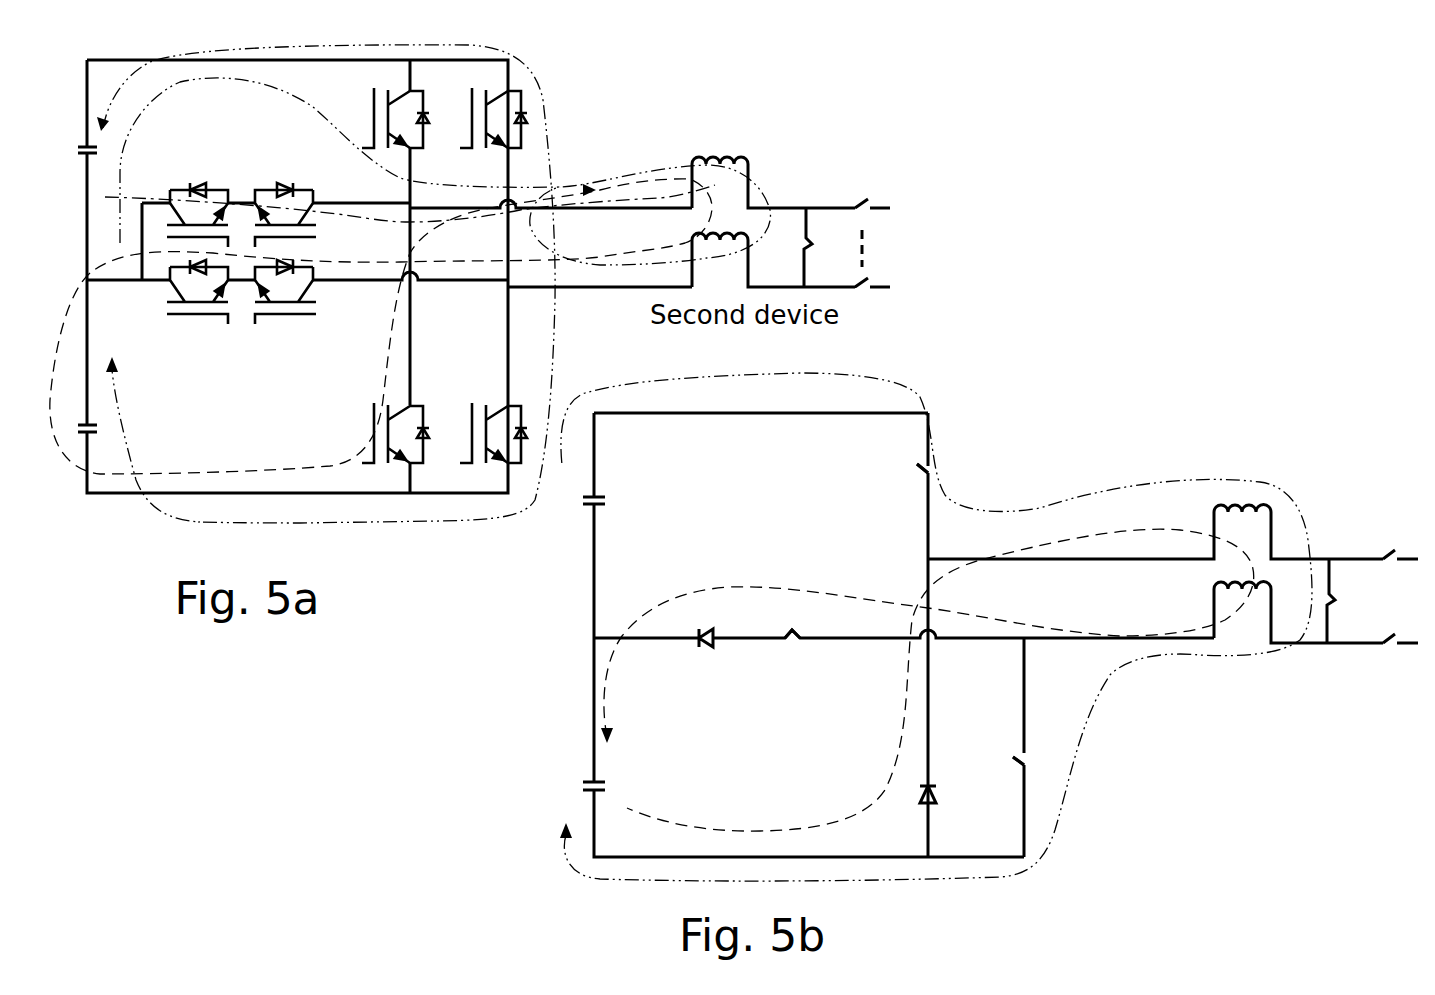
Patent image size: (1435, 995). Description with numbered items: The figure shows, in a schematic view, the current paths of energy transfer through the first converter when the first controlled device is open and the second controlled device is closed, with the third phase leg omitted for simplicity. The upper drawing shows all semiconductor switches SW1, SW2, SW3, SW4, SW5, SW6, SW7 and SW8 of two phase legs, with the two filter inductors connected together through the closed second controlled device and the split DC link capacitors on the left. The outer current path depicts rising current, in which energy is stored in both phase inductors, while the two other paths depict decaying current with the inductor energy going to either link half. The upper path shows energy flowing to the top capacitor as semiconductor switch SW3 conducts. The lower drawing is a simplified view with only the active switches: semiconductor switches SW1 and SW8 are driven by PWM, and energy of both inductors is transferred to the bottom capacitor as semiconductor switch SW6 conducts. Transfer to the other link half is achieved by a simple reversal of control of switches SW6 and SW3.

In FIG. 5A, the semiconductor switch SW1 is at (382, 103).
In FIG. 5B, the semiconductor switch SW1 is at (875, 494).
In FIG. 5A, the semiconductor switch SW2 is at (282, 201).
In FIG. 5A, the semiconductor switch SW3 is at (193, 201).
In FIG. 5A, the semiconductor switch SW4 is at (381, 449).
In FIG. 5A, the semiconductor switch SW5 is at (480, 103).
In FIG. 5A, the semiconductor switch SW6 is at (289, 311).
In FIG. 5B, the semiconductor switch SW6 is at (804, 666).
In FIG. 5A, the semiconductor switch SW7 is at (194, 311).
In FIG. 5A, the semiconductor switch SW8 is at (476, 449).
In FIG. 5B, the semiconductor switch SW8 is at (983, 803).